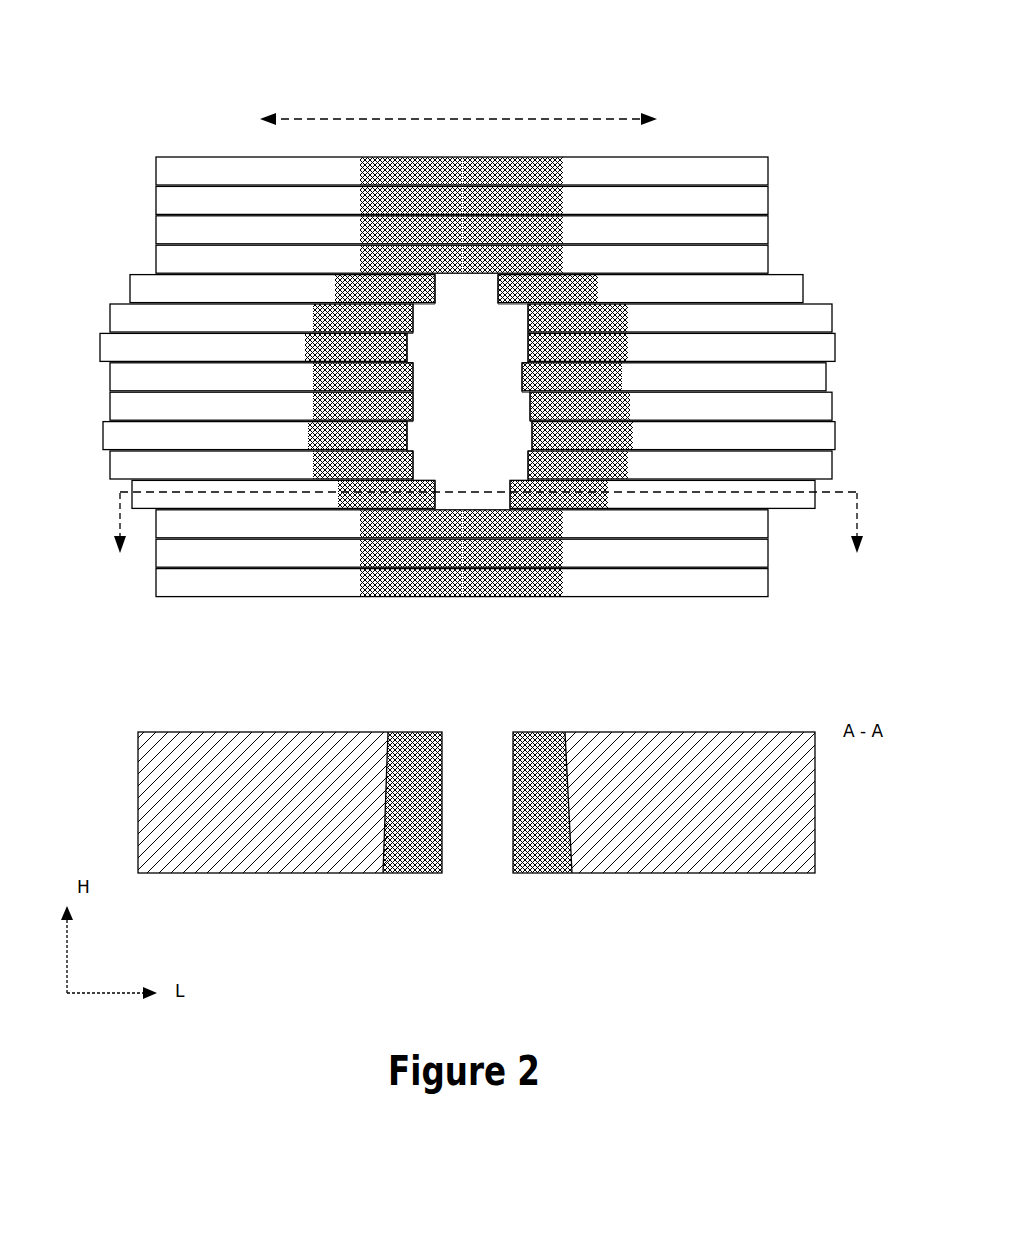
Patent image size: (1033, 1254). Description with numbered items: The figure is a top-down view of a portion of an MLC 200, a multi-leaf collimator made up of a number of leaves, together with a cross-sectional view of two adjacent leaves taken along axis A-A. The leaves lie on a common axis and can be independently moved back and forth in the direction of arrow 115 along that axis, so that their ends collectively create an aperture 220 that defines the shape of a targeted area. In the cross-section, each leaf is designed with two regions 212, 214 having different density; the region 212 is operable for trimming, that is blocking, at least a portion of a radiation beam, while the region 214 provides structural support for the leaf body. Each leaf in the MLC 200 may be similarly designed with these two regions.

The MLC 200 is at (487, 311).
The arrow 115 is at (478, 118).
The aperture 220 is at (469, 392).
The region 212 is at (548, 874).
The region 214 is at (795, 874).